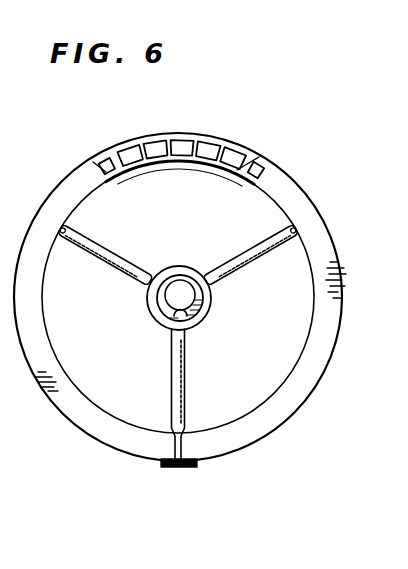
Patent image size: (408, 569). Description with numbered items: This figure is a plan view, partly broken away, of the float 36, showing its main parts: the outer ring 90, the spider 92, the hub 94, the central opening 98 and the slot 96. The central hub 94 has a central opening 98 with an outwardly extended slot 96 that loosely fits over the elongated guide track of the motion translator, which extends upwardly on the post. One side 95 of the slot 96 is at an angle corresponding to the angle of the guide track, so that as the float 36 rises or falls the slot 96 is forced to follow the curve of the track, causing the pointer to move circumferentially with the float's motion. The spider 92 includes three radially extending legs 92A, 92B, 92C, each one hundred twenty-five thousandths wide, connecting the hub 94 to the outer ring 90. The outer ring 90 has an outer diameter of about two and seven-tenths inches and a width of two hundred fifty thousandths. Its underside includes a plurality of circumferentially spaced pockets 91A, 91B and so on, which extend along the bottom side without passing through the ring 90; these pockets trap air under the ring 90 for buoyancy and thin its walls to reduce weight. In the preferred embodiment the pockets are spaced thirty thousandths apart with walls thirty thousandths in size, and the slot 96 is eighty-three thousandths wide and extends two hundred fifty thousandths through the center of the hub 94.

The float 36 is at (285, 117).
The outer ring 90 is at (98, 425).
The pocket 91A is at (127, 147).
The pocket 91B is at (157, 142).
The spider 92 is at (177, 340).
The leg 92A is at (263, 243).
The leg 92B is at (187, 396).
The leg 92C is at (110, 261).
The hub 94 is at (172, 270).
The side of the slot 95 is at (165, 291).
The slot 96 is at (157, 327).
The central opening 98 is at (177, 287).